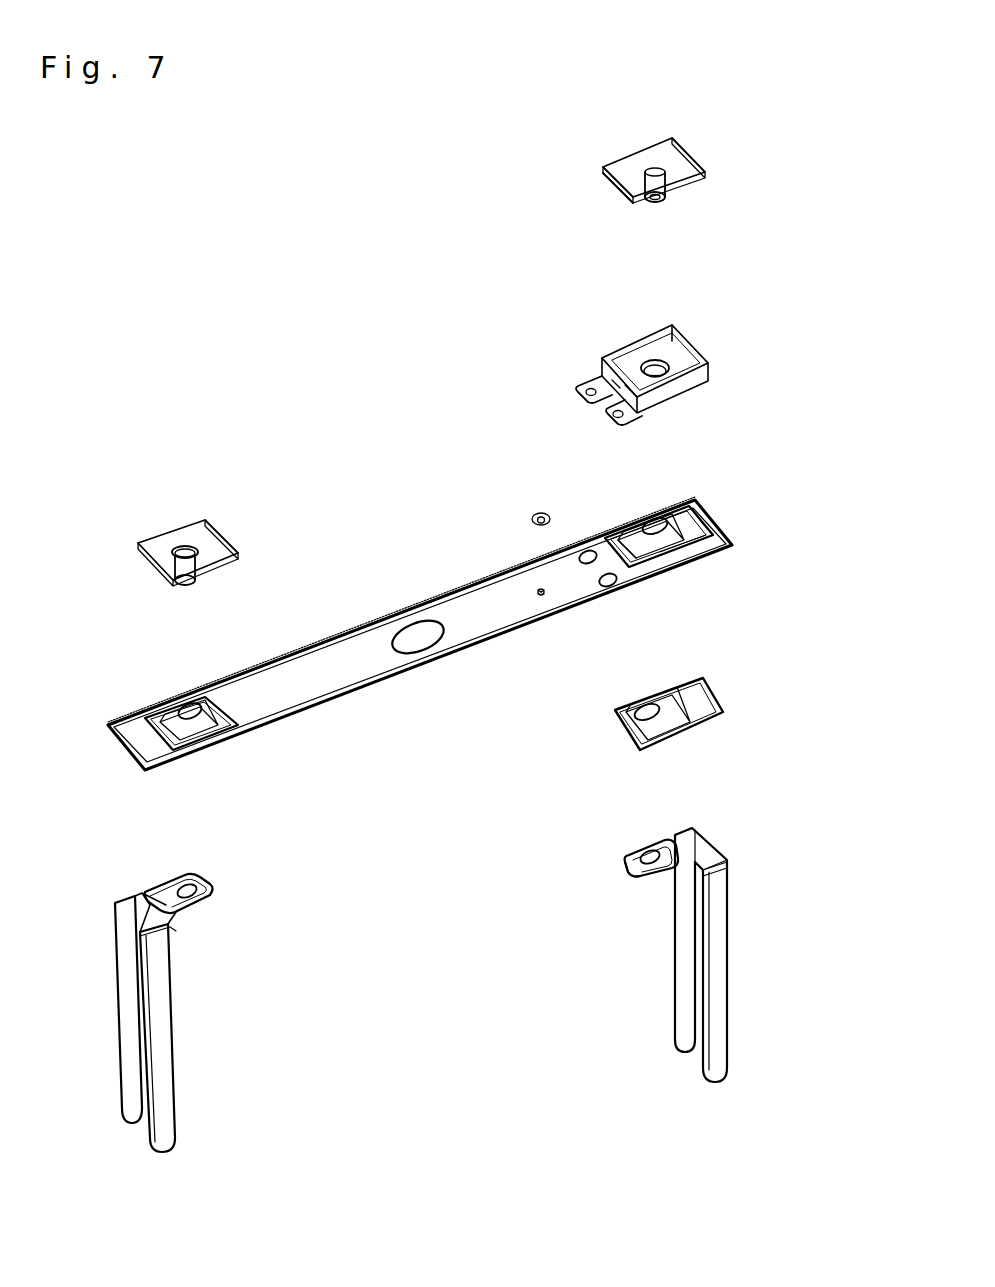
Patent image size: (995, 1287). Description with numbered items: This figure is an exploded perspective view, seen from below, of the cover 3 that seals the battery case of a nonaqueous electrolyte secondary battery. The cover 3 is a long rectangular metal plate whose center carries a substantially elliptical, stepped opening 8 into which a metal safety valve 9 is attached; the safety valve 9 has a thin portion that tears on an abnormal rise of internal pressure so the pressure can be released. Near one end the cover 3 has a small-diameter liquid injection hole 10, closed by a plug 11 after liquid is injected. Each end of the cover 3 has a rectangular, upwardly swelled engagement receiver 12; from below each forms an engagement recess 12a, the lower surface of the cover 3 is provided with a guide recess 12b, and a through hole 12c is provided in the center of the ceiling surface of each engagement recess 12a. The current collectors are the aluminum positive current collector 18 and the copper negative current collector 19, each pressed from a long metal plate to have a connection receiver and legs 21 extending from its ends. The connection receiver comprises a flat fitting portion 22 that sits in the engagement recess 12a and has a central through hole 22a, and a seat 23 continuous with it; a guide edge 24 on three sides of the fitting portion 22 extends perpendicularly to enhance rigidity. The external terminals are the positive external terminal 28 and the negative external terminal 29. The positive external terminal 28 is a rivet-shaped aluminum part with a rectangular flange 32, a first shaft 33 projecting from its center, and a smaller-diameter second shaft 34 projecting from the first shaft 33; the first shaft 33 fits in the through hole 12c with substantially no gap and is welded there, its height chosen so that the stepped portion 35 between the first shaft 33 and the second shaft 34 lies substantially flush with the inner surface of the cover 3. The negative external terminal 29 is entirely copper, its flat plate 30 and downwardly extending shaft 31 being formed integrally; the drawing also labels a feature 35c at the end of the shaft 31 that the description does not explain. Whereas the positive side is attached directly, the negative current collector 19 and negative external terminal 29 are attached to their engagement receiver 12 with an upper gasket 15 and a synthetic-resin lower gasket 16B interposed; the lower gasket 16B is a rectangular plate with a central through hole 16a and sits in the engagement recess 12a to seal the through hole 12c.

The cover 3 is at (352, 690).
The opening 8 is at (431, 652).
The safety valve 9 is at (424, 604).
The liquid injection hole 10 is at (542, 598).
The plug 11 is at (539, 516).
The engagement receiver 12 is at (632, 524).
The engagement recess 12a is at (655, 570).
The guide recess 12b is at (698, 550).
The through hole 12c is at (641, 578).
The upper gasket 15 is at (604, 352).
The lower gasket 16B is at (714, 710).
The through hole 16a is at (668, 735).
The positive current collector 18 is at (172, 1012).
The negative current collector 19 is at (686, 978).
The legs 21 is at (728, 921).
The fitting portion 22 is at (624, 850).
The through hole 22a is at (652, 870).
The seat 23 is at (722, 864).
The guide edge 24 is at (630, 874).
The positive external terminal 28 is at (252, 563).
The negative external terminal 29 is at (622, 186).
The flat plate 30 is at (616, 178).
The shaft 31 is at (640, 190).
The flange 32 is at (222, 535).
The first shaft 33 is at (200, 555).
The second shaft 34 is at (198, 572).
The stepped portion 35 is at (172, 574).
The pin tip 35c is at (657, 202).